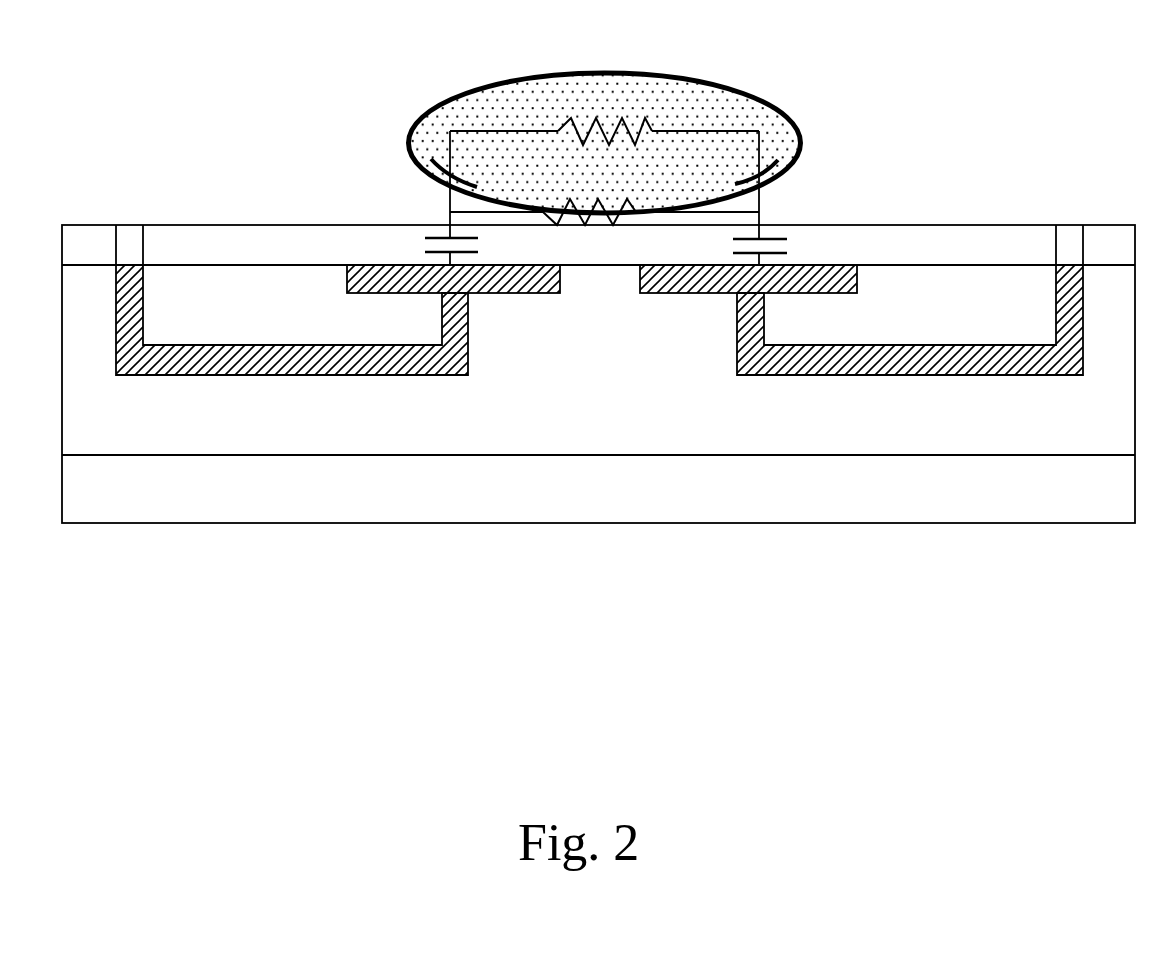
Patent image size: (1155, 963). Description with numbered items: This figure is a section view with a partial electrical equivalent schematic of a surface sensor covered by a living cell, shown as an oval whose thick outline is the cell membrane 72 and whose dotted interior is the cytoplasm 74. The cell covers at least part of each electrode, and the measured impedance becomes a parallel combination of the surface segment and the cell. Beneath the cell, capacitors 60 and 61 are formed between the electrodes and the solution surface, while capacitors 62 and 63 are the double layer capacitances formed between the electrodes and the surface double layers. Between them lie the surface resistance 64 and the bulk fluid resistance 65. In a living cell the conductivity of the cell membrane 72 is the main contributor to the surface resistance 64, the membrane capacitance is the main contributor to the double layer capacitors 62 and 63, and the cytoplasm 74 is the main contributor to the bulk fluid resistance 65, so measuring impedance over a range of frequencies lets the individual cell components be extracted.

The capacitor 60 is at (422, 237).
The capacitor 61 is at (792, 222).
The capacitor 62 is at (418, 150).
The capacitor 63 is at (788, 158).
The surface resistance 64 is at (582, 197).
The bulk fluid resistance 65 is at (613, 113).
The cell membrane 72 is at (697, 73).
The cytoplasm 74 is at (540, 102).